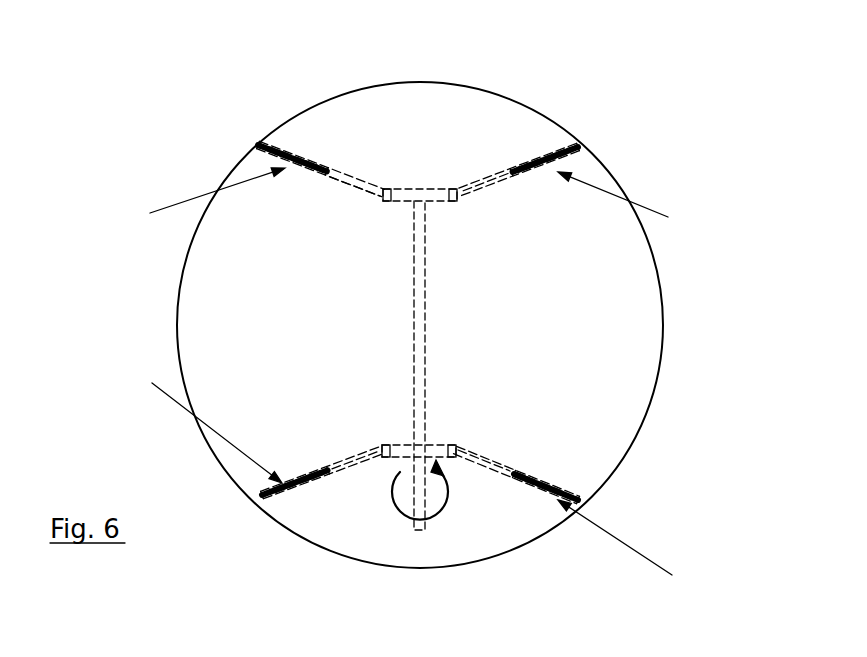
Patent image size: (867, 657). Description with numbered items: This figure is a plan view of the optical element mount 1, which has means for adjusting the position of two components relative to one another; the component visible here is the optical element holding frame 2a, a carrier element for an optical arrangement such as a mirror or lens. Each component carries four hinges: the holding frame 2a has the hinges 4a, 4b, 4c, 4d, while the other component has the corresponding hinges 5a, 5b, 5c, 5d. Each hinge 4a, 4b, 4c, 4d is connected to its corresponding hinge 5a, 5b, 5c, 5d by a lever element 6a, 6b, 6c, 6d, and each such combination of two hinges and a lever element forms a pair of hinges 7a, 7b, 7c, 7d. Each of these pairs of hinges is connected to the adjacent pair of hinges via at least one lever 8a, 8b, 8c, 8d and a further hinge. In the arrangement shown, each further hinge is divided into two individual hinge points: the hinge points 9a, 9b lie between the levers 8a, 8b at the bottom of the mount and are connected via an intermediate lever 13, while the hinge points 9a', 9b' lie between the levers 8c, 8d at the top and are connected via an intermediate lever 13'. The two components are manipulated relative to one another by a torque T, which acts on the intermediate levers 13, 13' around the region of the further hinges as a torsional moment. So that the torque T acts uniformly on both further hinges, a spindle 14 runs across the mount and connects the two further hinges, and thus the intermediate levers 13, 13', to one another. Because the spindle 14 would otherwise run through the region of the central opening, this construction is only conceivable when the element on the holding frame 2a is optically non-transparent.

The optical element mount 1 is at (104, 164).
The optical element holding frame 2a is at (197, 324).
The hinge 4a is at (295, 491).
The hinge 4b is at (565, 495).
The hinge 4c is at (575, 146).
The hinge 4d is at (262, 146).
The hinge 5a is at (317, 482).
The hinge 5b is at (527, 480).
The hinge 5c is at (530, 158).
The hinge 5d is at (302, 160).
The lever element 6a is at (300, 487).
The lever element 6b is at (548, 484).
The lever element 6c is at (548, 155).
The lever element 6d is at (280, 150).
The pair of hinges 7a is at (199, 423).
The pair of hinges 7b is at (634, 546).
The pair of hinges 7c is at (633, 202).
The pair of hinges 7d is at (202, 201).
The lever 8a is at (363, 463).
The lever 8b is at (494, 468).
The lever 8c is at (485, 178).
The lever 8d is at (360, 183).
The hinge point 9a is at (363, 526).
The hinge point 9b is at (469, 534).
The hinge point 9a' is at (360, 101).
The hinge point 9b' is at (440, 101).
The intermediate lever 13 is at (419, 531).
The intermediate lever 13' is at (412, 116).
The spindle 14 is at (425, 400).
The torque T is at (423, 506).